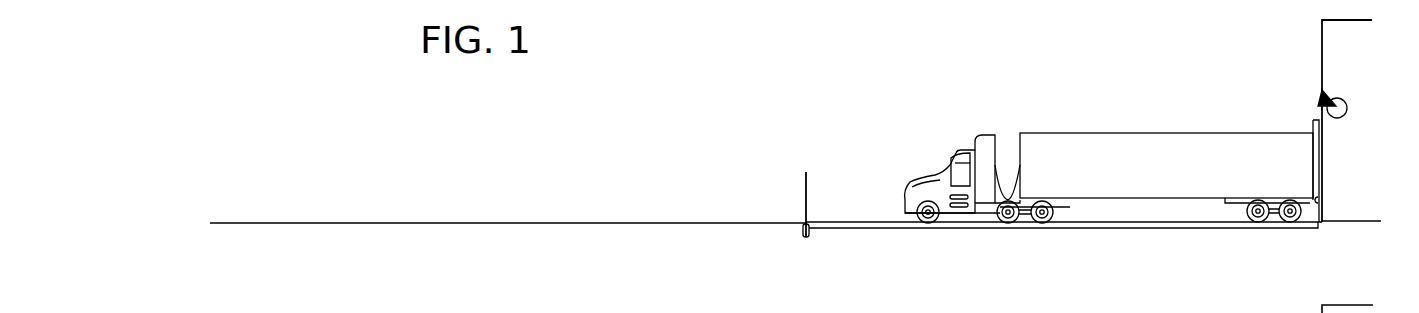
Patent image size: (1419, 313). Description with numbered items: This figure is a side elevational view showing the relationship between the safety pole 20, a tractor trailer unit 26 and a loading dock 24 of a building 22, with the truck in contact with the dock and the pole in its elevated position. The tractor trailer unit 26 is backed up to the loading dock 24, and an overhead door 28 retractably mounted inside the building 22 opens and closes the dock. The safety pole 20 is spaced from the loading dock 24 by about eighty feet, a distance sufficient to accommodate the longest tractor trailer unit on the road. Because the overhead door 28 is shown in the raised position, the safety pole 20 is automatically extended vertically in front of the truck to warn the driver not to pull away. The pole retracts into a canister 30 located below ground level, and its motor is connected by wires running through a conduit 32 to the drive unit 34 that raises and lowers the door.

The safety pole 20 is at (806, 190).
The building 22 is at (1320, 53).
The loading dock 24 is at (1312, 124).
The tractor trailer unit 26 is at (990, 84).
The overhead door 28 is at (1328, 120).
The canister 30 is at (800, 226).
The conduit 32 is at (942, 231).
The drive unit 34 is at (1346, 106).